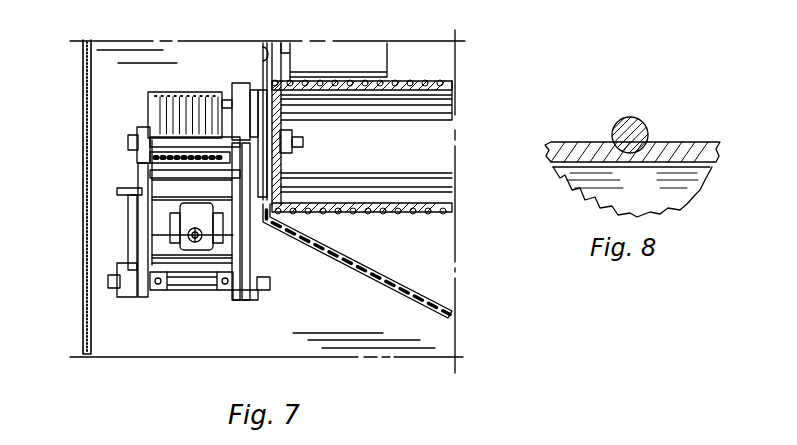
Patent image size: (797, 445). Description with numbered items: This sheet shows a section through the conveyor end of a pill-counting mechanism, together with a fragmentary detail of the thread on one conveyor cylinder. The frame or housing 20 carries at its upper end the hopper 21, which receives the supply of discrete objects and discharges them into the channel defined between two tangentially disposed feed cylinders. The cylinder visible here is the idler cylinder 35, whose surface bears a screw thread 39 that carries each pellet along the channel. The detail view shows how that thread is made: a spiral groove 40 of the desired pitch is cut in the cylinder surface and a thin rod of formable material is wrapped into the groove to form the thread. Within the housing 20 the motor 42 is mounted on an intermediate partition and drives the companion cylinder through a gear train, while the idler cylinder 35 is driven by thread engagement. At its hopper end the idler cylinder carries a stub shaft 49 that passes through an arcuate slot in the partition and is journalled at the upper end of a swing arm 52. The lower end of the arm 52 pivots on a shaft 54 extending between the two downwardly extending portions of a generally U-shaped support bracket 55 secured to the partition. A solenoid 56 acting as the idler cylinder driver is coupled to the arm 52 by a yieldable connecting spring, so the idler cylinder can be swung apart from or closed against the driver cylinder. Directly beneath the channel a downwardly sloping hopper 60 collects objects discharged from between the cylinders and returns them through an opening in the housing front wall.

In FIG. 7, the frame or housing 20 is at (85, 100).
In FIG. 7, the hopper 21 is at (323, 58).
In FIG. 7, the idler cylinder 35 is at (445, 84).
In FIG. 8, the idler cylinder 35 is at (700, 145).
In FIG. 7, the screw thread 39 is at (430, 212).
In FIG. 8, the screw thread 39 is at (638, 121).
In FIG. 8, the spiral groove 40 is at (631, 162).
In FIG. 7, the motor 42 is at (178, 97).
In FIG. 7, the stub shaft 49 is at (249, 112).
In FIG. 7, the arm 52 is at (148, 170).
In FIG. 7, the shaft 54 is at (190, 288).
In FIG. 7, the support bracket 55 is at (132, 230).
In FIG. 7, the solenoid 56 is at (190, 210).
In FIG. 7, the downwardly sloping hopper 60 is at (366, 273).